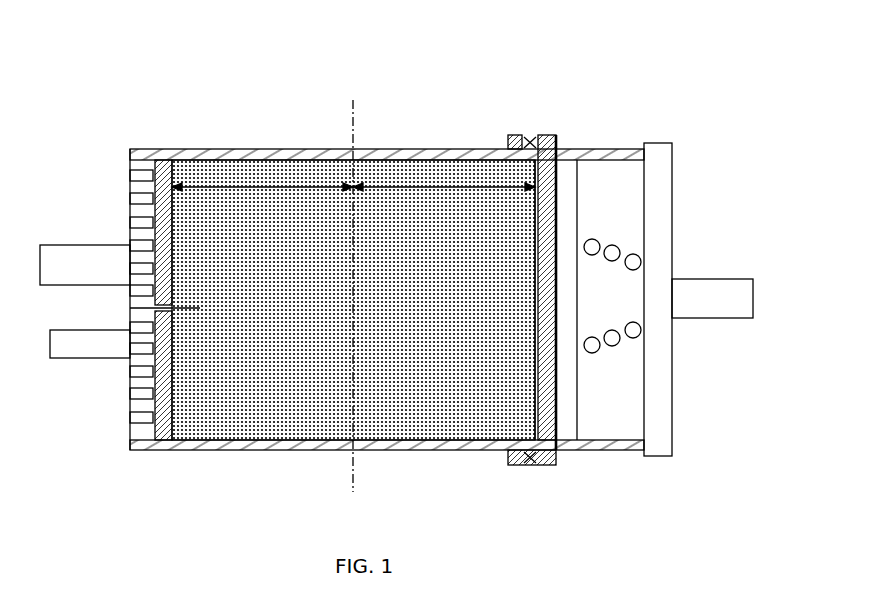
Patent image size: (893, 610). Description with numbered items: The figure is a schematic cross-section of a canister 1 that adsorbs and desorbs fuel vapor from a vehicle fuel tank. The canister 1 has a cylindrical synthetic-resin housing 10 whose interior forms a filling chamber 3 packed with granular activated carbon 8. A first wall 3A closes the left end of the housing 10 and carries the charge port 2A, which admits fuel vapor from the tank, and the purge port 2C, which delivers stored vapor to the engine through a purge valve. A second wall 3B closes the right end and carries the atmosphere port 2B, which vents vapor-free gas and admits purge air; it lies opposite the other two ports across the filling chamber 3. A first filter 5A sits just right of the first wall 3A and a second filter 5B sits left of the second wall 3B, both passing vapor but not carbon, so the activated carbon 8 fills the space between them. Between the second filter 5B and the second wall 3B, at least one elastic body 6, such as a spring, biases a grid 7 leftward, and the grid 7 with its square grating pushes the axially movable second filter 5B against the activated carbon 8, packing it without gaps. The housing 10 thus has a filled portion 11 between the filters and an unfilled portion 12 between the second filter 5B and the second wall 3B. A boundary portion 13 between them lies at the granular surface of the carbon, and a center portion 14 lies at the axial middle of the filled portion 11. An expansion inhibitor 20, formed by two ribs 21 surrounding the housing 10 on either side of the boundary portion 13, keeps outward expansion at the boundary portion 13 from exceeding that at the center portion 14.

The canister 1 is at (415, 273).
The filling chamber 3 is at (431, 281).
The first wall 3A is at (130, 432).
The second wall 3B is at (673, 443).
The charge port 2A is at (80, 255).
The atmosphere port 2B is at (705, 297).
The purge port 2C is at (80, 348).
The first filter 5A is at (163, 208).
The second filter 5B is at (553, 405).
The elastic body 6 is at (627, 333).
The grid 7 is at (567, 377).
The activated carbon 8 is at (283, 405).
The housing 10 is at (466, 160).
The filled portion 11 is at (245, 150).
The unfilled portion 12 is at (607, 160).
The boundary portion 13 is at (531, 140).
The center portion 14 is at (345, 145).
The expansion inhibitor 20 is at (518, 136).
The ribs 21 is at (505, 150).